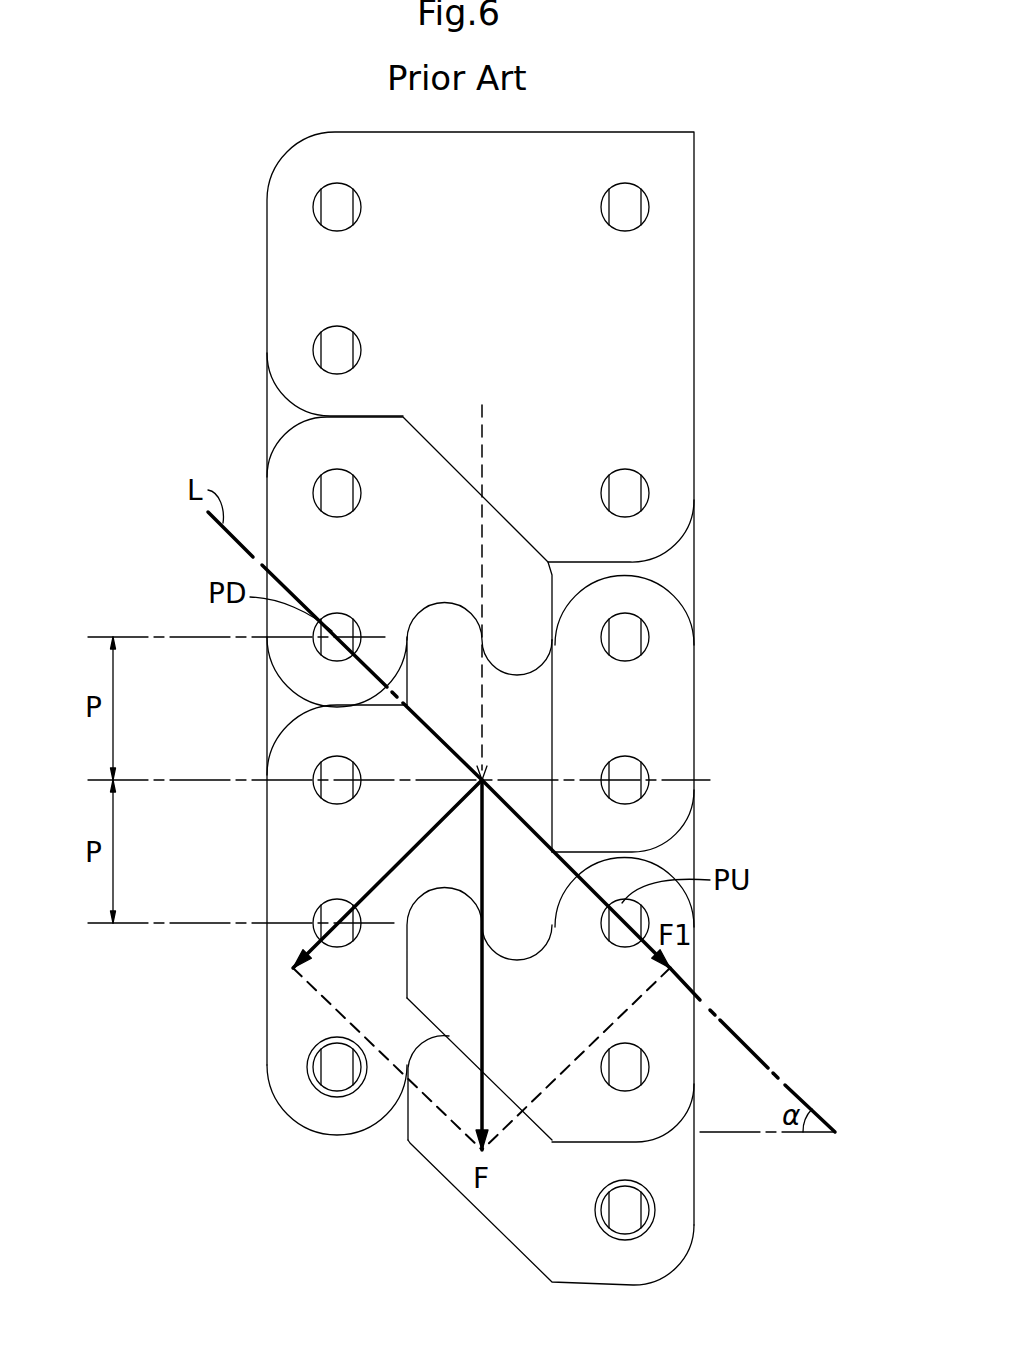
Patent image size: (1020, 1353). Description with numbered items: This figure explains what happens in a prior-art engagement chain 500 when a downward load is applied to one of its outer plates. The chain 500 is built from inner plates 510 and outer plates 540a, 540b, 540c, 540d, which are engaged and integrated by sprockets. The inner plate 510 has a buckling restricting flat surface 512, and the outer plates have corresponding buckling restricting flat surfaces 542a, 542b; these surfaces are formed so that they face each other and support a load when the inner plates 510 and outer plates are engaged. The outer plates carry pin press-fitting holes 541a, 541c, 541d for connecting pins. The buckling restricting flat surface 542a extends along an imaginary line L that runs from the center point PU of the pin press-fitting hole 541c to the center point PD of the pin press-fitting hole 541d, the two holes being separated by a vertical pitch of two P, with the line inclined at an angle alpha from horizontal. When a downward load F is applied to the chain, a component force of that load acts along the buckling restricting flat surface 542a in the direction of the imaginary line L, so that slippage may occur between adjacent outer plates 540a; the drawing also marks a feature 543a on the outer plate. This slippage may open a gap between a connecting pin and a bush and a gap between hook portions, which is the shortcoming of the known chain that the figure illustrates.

The engagement chain 500 is at (208, 211).
The outer plate 540a is at (670, 688).
The outer plate 540b is at (293, 902).
The outer plate 540c is at (650, 1118).
The outer plate 540d is at (277, 510).
The pin press-fitting hole 541a is at (625, 765).
The pin press-fitting hole 541c is at (643, 913).
The pin press-fitting hole 541d is at (330, 653).
The buckling restricting flat surface 542a is at (497, 807).
The buckling restricting flat surface 542b is at (508, 861).
The edge portion 543a is at (658, 838).
The inner plate 510 is at (293, 1077).
The buckling restricting flat surface 512 is at (512, 1240).